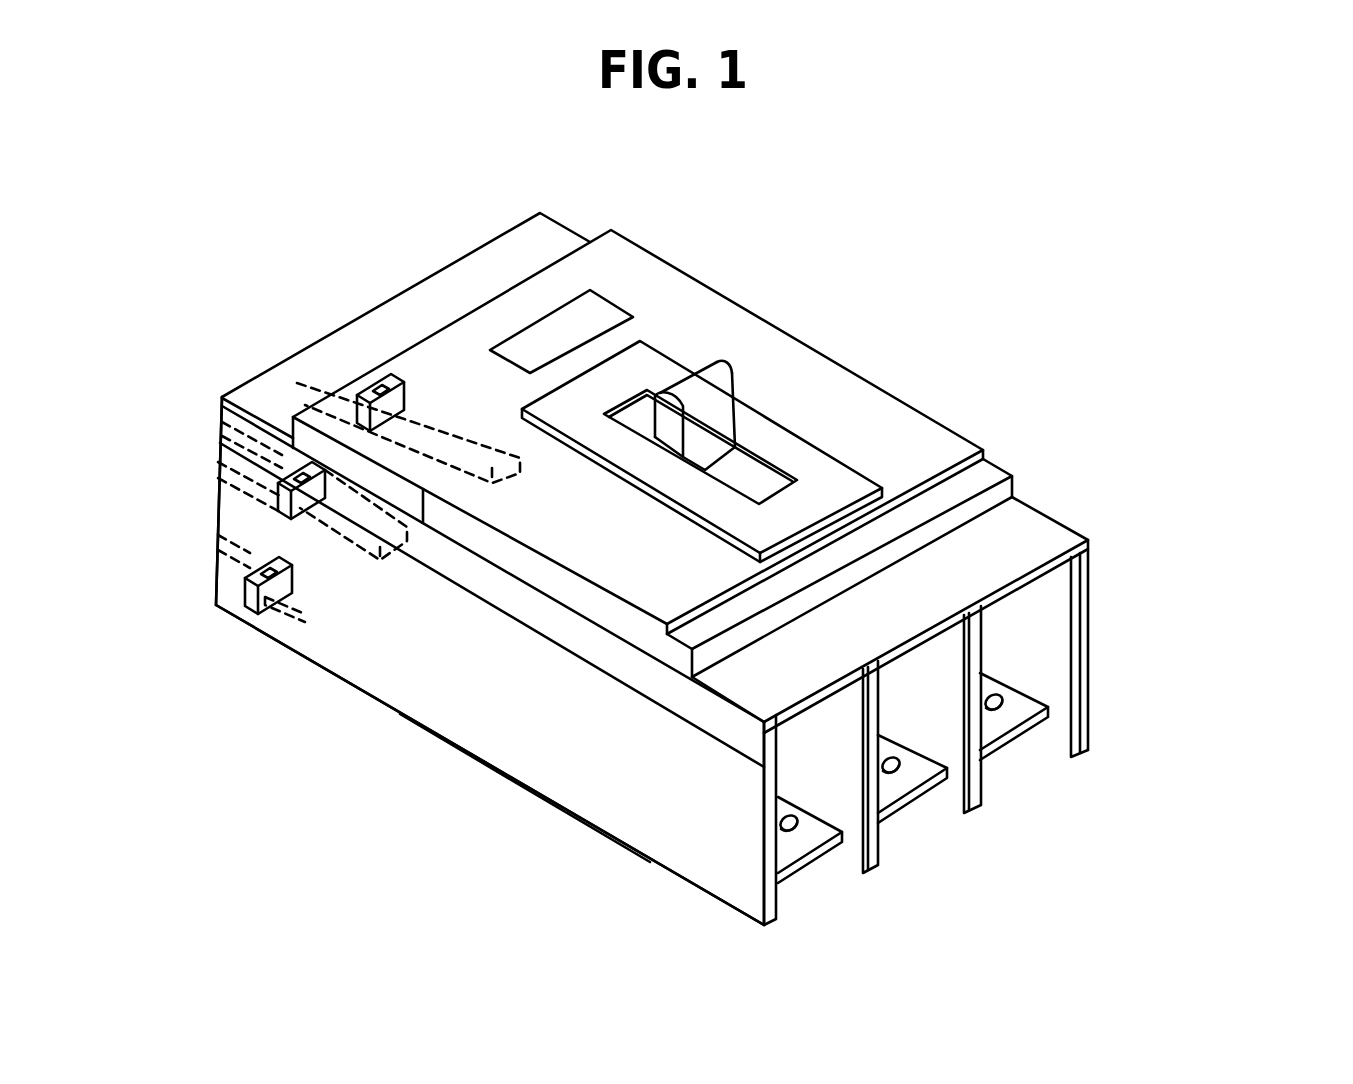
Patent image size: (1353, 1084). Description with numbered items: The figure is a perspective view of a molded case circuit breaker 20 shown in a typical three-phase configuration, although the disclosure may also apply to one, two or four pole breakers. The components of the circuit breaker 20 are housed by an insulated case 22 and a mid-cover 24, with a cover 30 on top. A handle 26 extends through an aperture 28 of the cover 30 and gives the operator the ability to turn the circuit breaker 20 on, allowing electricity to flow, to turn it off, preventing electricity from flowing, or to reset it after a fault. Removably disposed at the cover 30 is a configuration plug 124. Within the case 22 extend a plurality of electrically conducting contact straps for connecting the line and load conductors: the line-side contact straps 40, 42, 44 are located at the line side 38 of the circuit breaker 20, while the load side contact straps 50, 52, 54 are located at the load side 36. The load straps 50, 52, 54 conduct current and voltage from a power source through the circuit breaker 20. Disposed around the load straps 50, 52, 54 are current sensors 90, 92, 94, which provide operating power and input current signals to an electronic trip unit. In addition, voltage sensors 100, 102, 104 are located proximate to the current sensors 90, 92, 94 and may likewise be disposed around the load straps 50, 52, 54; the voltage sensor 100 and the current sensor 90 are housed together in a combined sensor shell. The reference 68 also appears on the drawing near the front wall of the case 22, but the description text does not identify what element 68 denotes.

The molded case circuit breaker 20 is at (1162, 360).
The insulated case 22 is at (410, 683).
The mid-cover 24 is at (680, 688).
The handle 26 is at (735, 378).
The aperture 28 is at (764, 456).
The cover 30 is at (993, 463).
The load side 36 is at (240, 618).
The line side 38 is at (693, 893).
The line-side contact strap 40 is at (808, 862).
The line-side contact strap 42 is at (913, 805).
The line-side contact strap 44 is at (1022, 746).
The load side contact strap 50 is at (216, 540).
The load side contact strap 52 is at (370, 518).
The load side contact strap 54 is at (447, 433).
The front wall 68 is at (548, 802).
The current sensor 90 is at (262, 572).
The current sensor 92 is at (280, 480).
The current sensor 94 is at (385, 376).
The voltage sensor 100 is at (295, 586).
The voltage sensor 102 is at (270, 400).
The voltage sensor 104 is at (398, 388).
The configuration plug 124 is at (598, 322).